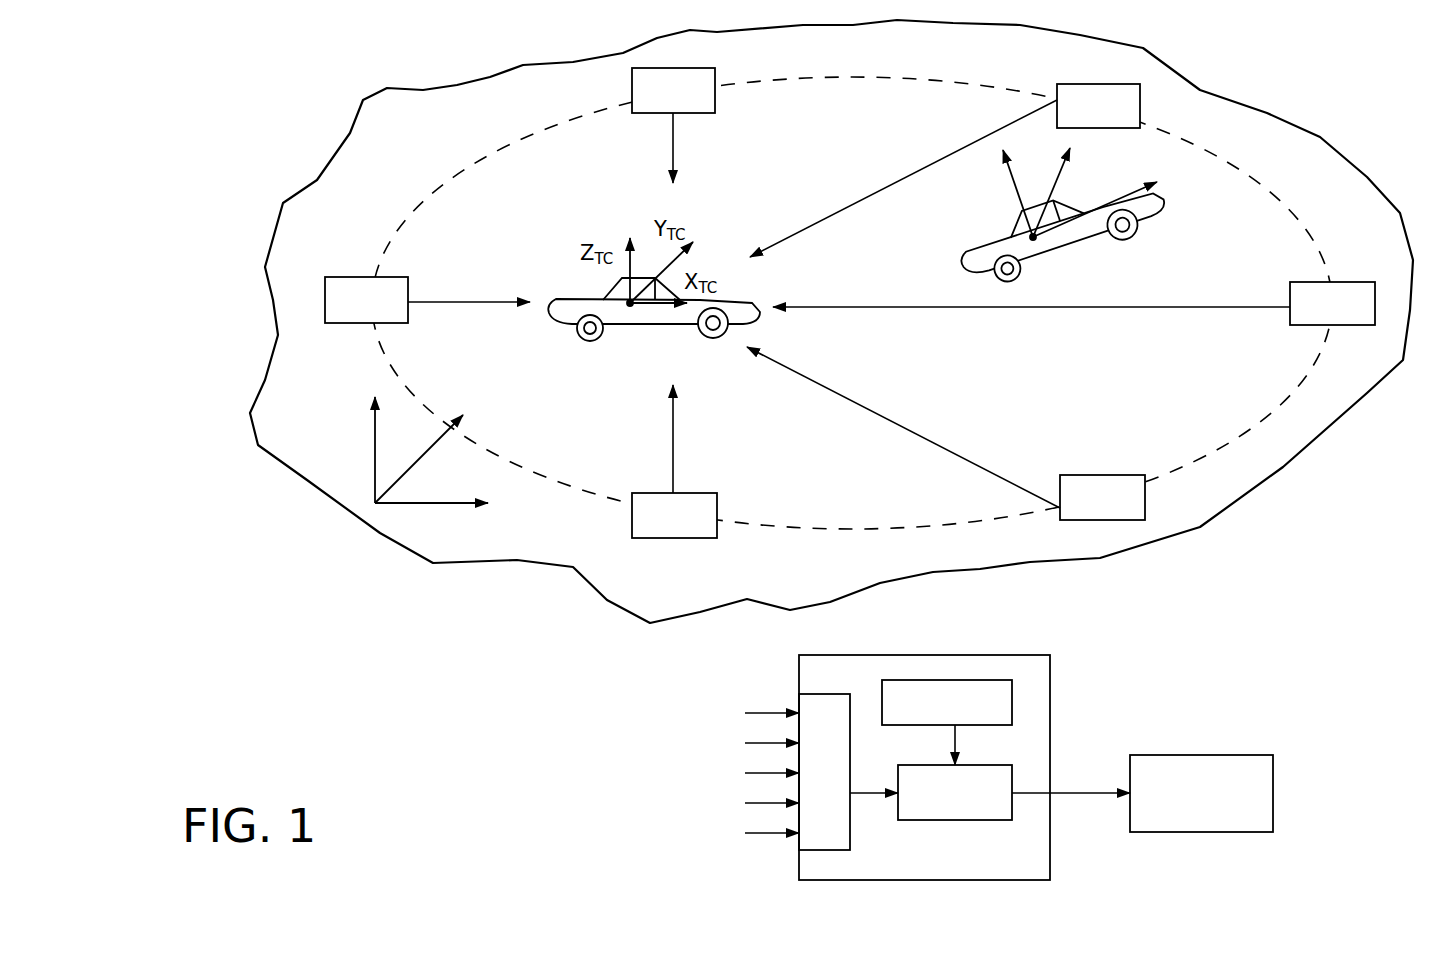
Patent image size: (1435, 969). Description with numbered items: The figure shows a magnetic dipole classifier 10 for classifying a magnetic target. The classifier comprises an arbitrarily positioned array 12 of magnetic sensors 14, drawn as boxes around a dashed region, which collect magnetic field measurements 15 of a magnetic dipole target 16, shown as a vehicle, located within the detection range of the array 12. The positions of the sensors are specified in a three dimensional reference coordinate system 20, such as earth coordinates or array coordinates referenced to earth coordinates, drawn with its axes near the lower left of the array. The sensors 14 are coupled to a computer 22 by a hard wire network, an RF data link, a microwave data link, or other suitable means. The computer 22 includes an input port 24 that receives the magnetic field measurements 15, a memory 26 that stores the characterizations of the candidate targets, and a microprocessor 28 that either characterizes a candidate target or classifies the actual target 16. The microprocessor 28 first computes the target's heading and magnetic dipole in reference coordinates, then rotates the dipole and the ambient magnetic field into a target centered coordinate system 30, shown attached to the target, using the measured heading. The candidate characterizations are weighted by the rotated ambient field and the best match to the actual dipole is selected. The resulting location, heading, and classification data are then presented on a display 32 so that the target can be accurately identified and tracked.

The magnetic dipole classifier 10 is at (363, 700).
The array of magnetic sensors 12 is at (463, 157).
The magnetic sensor 14 is at (360, 277).
The magnetic field measurement 15 is at (675, 437).
The magnetic dipole target 16 is at (612, 313).
The reference coordinate system 20 is at (390, 458).
The computer 22 is at (1011, 655).
The input port 24 is at (845, 830).
The memory 26 is at (920, 680).
The microprocessor 28 is at (990, 813).
The target centered coordinate system 30 is at (1010, 202).
The display 32 is at (1218, 755).